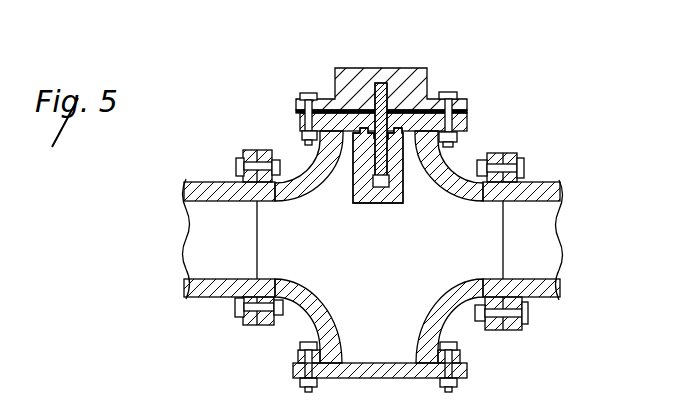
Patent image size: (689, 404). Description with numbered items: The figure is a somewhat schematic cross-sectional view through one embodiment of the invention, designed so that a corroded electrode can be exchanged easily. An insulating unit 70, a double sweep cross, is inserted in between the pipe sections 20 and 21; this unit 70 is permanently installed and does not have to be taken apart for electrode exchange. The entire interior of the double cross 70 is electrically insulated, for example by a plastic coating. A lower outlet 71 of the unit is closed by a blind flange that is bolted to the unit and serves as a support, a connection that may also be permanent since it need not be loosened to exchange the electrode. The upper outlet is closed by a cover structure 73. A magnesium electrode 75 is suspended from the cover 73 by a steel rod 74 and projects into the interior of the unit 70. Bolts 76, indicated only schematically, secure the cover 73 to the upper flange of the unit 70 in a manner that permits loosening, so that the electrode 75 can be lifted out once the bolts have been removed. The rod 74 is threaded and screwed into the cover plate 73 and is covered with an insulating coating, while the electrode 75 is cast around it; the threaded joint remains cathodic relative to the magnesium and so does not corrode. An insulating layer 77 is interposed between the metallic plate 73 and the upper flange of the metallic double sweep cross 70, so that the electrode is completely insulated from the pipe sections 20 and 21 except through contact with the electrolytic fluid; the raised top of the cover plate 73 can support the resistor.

The pipe section 20 is at (208, 288).
The pipe section 21 is at (560, 299).
The insulating unit 70 is at (306, 305).
The outlet 71 is at (380, 357).
The cover structure 73 is at (412, 72).
The steel rod 74 is at (373, 118).
The magnesium electrode 75 is at (392, 192).
The bolts 76 is at (313, 92).
The insulating layer 77 is at (468, 112).